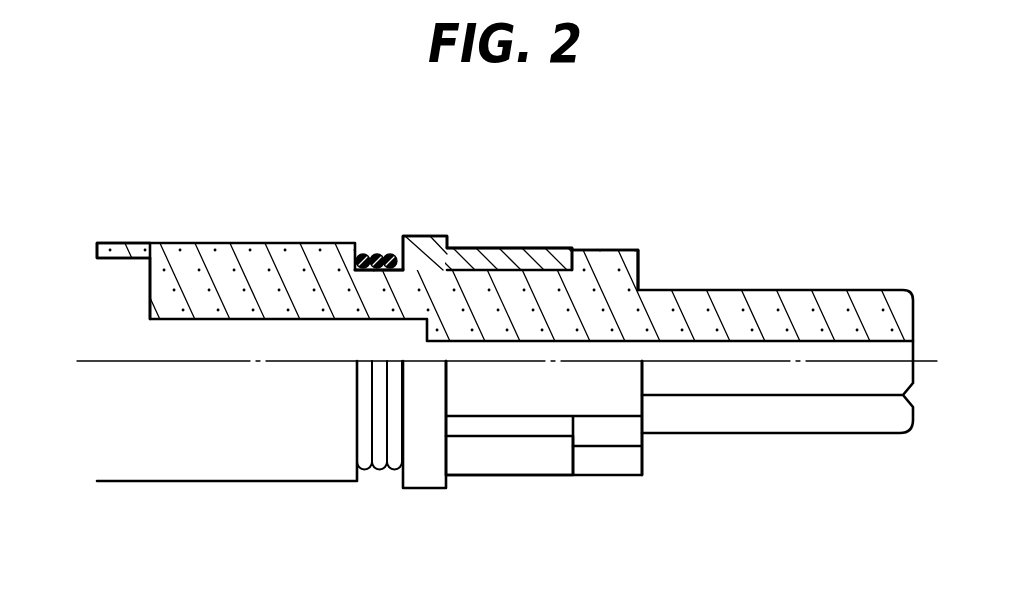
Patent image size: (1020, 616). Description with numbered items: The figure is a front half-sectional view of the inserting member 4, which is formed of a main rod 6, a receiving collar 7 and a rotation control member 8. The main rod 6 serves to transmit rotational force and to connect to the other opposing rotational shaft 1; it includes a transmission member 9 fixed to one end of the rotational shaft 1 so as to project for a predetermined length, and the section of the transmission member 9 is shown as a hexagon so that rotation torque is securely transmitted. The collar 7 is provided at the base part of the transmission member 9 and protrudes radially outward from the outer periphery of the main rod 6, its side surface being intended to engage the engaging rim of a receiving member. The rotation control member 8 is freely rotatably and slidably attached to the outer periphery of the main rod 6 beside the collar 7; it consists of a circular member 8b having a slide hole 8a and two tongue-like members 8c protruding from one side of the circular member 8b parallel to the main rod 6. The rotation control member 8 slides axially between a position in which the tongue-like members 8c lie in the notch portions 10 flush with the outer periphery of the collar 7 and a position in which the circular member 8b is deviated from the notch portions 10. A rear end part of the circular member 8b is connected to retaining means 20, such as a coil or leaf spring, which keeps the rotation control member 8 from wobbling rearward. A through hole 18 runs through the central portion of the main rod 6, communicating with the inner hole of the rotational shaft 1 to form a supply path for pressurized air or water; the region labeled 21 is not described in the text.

The rotational shaft 1 is at (145, 243).
The inserting member 4 is at (665, 189).
The main rod 6 is at (260, 247).
The receiving collar 7 is at (597, 250).
The rotation control member 8 is at (506, 224).
The slide hole 8a is at (445, 240).
The circular member 8b is at (422, 240).
The tongue-like member 8c is at (543, 247).
The transmission member 9 is at (798, 298).
The notch portion 10 is at (617, 390).
The through hole 18 is at (290, 347).
The retaining means 20 is at (377, 258).
The cavity 21 is at (112, 300).